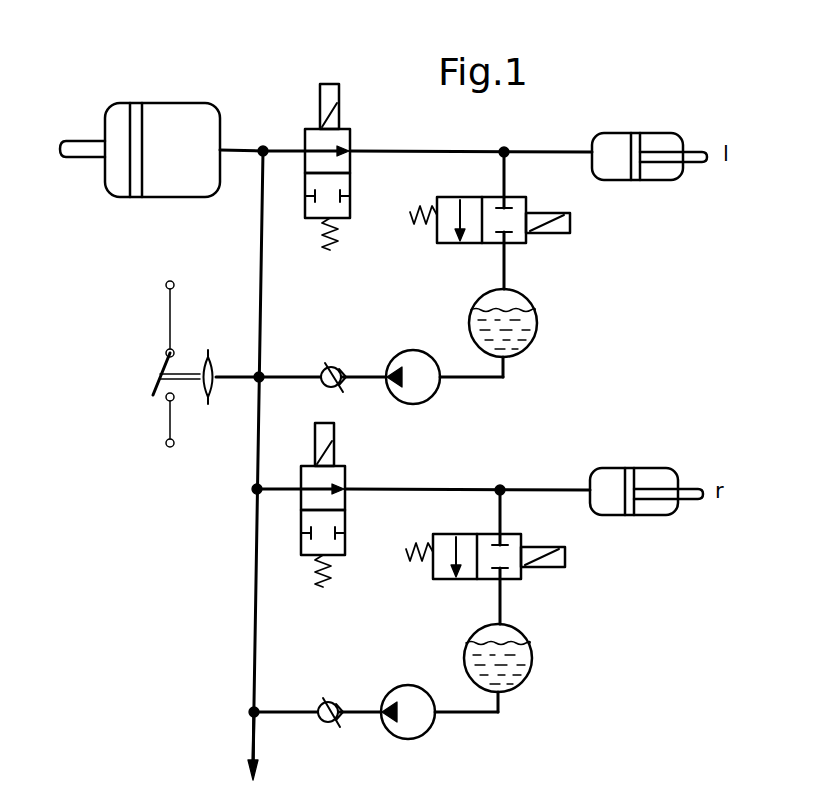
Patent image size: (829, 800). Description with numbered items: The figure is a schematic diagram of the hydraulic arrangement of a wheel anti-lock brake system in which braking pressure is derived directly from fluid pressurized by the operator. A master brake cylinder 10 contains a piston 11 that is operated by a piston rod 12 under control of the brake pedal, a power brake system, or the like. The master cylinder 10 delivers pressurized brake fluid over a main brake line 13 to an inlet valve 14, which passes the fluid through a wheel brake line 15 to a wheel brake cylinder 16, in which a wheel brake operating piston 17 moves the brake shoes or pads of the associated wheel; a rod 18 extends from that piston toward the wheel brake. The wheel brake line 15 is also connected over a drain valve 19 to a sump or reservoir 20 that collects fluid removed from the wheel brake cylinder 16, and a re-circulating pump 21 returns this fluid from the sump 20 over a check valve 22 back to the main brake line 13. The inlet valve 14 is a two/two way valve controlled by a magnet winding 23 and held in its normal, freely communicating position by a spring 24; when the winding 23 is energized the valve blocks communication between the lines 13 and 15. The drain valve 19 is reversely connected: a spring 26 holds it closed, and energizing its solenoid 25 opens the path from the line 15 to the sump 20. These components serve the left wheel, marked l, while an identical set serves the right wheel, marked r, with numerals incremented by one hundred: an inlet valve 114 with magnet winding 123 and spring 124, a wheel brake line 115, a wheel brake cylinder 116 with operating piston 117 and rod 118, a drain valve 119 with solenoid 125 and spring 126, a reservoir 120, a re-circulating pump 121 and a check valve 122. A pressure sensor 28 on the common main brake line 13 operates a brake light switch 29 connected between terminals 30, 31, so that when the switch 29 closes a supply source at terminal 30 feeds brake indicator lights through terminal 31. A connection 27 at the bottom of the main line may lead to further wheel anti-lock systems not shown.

The master brake cylinder 10 is at (172, 105).
The piston 11 is at (137, 132).
The piston rod 12 is at (85, 152).
The main brake line 13 is at (241, 151).
The inlet valve 14 is at (351, 136).
The wheel brake line 15 is at (452, 152).
The wheel brake cylinder 16 is at (612, 134).
The wheel brake operating piston 17 is at (637, 180).
The piston rod of left wheel cylinder 18 is at (694, 164).
The drain valve 19 is at (471, 244).
The sump or reservoir 20 is at (536, 308).
The re-circulating pump 21 is at (426, 356).
The check valve 22 is at (336, 367).
The magnet winding 23 is at (339, 91).
The spring 24 is at (322, 235).
The magnet winding or solenoid 25 is at (554, 233).
The spring 26 is at (424, 229).
The connection 27 is at (259, 766).
The pressure sensor 28 is at (214, 366).
The brake light switch 29 is at (160, 370).
The terminal 30 is at (175, 285).
The terminal 31 is at (165, 444).
The inlet valve 114 is at (346, 473).
The wheel brake line 115 is at (433, 489).
The wheel brake cylinder 116 is at (610, 468).
The wheel brake operating piston 117 is at (632, 514).
The piston rod of right wheel cylinder 118 is at (693, 501).
The drain valve 119 is at (469, 580).
The sump or reservoir 120 is at (532, 647).
The re-circulating pump 121 is at (411, 690).
The check valve 122 is at (330, 701).
The magnet winding 123 is at (334, 448).
The spring 124 is at (330, 573).
The magnet winding or solenoid 125 is at (553, 568).
The spring 126 is at (425, 568).